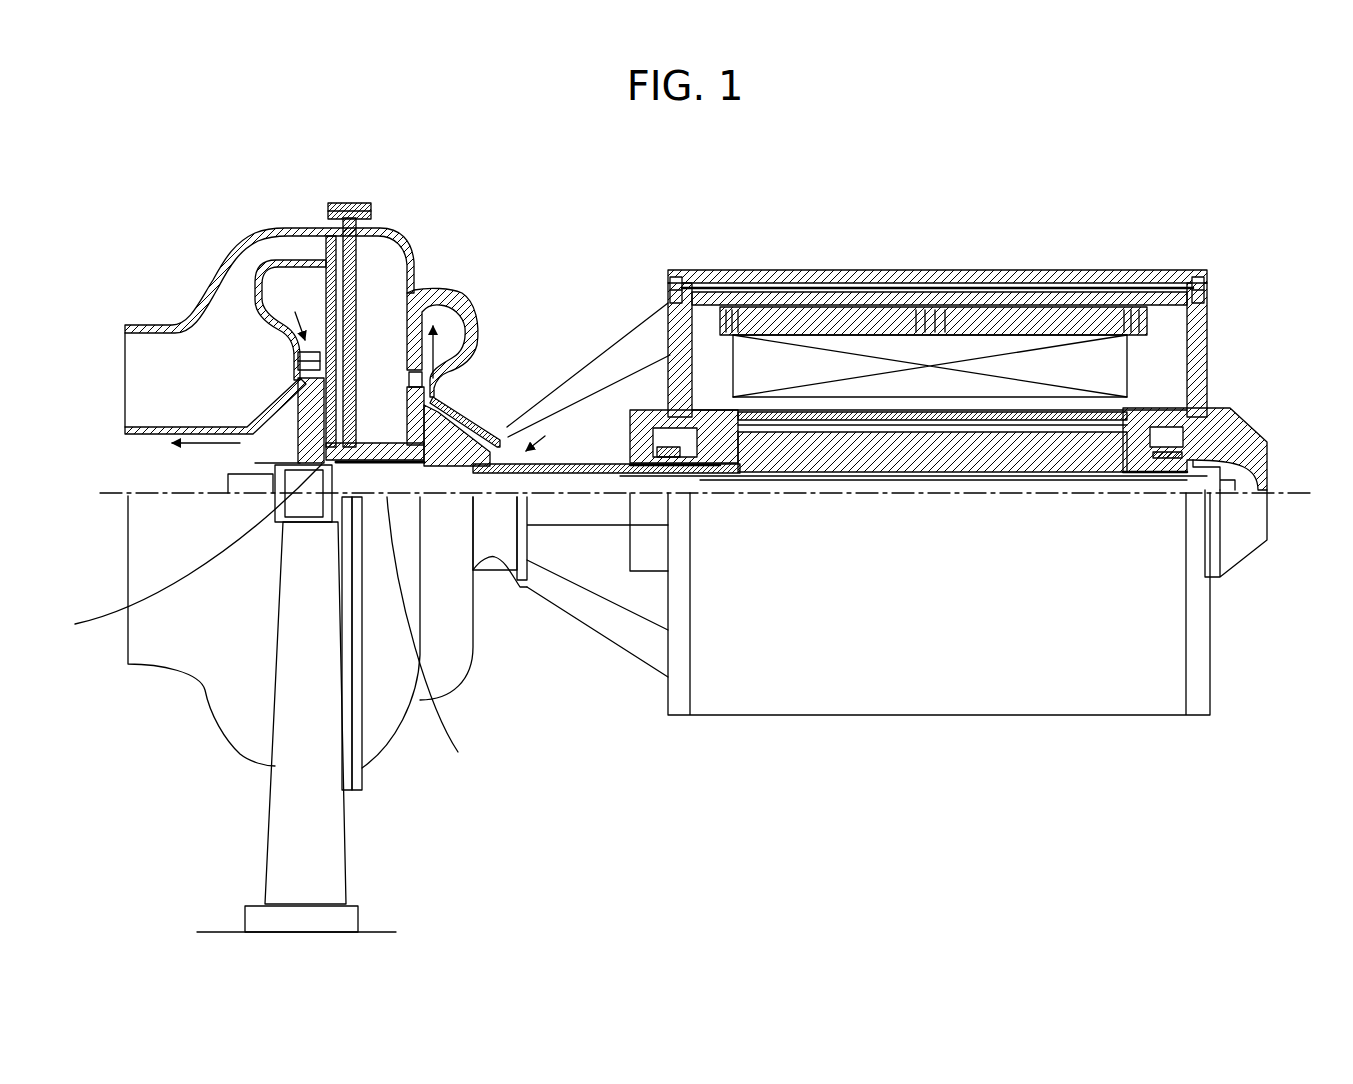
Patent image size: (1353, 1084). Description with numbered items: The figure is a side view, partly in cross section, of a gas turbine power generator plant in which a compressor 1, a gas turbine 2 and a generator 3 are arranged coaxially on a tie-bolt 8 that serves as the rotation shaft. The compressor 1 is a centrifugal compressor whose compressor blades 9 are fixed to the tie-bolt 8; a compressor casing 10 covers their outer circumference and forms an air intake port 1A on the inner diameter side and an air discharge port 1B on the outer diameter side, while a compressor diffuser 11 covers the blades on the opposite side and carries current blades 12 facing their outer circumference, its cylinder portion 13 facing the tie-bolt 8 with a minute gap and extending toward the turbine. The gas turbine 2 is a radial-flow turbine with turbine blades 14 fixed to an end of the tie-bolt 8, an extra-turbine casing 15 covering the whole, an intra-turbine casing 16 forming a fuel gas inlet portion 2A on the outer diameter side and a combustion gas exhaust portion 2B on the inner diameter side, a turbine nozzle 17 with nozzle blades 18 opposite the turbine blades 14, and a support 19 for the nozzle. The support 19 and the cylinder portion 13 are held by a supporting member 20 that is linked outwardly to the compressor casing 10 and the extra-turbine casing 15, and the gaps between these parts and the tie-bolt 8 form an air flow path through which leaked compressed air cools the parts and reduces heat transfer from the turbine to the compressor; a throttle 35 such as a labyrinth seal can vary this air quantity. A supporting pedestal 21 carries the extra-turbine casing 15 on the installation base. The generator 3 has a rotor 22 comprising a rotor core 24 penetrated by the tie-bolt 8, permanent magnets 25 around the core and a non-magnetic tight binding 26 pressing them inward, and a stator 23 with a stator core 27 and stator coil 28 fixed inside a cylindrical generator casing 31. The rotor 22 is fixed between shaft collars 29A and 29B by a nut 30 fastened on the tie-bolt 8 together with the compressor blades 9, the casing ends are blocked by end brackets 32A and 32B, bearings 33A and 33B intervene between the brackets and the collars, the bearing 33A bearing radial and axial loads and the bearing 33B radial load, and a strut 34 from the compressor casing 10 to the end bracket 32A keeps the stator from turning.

The compressor 1 is at (461, 298).
The air intake port 1A is at (506, 440).
The air discharge port 1B is at (438, 320).
The gas turbine 2 is at (130, 325).
The fuel gas inlet portion 2A is at (300, 266).
The combustion gas exhaust portion 2B is at (138, 485).
The generator 3 is at (972, 270).
The tie-bolt 8 is at (495, 560).
The compressor blades 9 is at (486, 405).
The compressor casing 10 is at (464, 301).
The compressor diffuser 11 is at (408, 382).
The current blades 12 is at (410, 366).
The cylinder portion 13 is at (385, 443).
The turbine blades 14 is at (273, 437).
The extra-turbine casing 15 is at (214, 278).
The intra-turbine casing 16 is at (249, 237).
The turbine nozzle 17 is at (293, 380).
The nozzle blades 18 is at (313, 363).
The support 19 is at (338, 300).
The supporting member 20 is at (375, 228).
The supporting pedestal 21 is at (280, 820).
The rotor 22 is at (808, 792).
The stator 23 is at (886, 196).
The rotor core 24 is at (917, 472).
The permanent magnets 25 is at (855, 472).
The tight binding 26 is at (980, 472).
The stator core 27 is at (807, 322).
The stator coil 28 is at (869, 363).
The shaft collar 29A is at (577, 475).
The shaft collar 29B is at (1158, 462).
The nut 30 is at (1263, 468).
The generator casing 31 is at (1099, 270).
The end bracket 32A is at (668, 303).
The end bracket 32B is at (1207, 343).
The bearing 33A is at (662, 410).
The bearing 33B is at (1233, 421).
The strut 34 is at (633, 643).
The throttle 35 is at (353, 497).